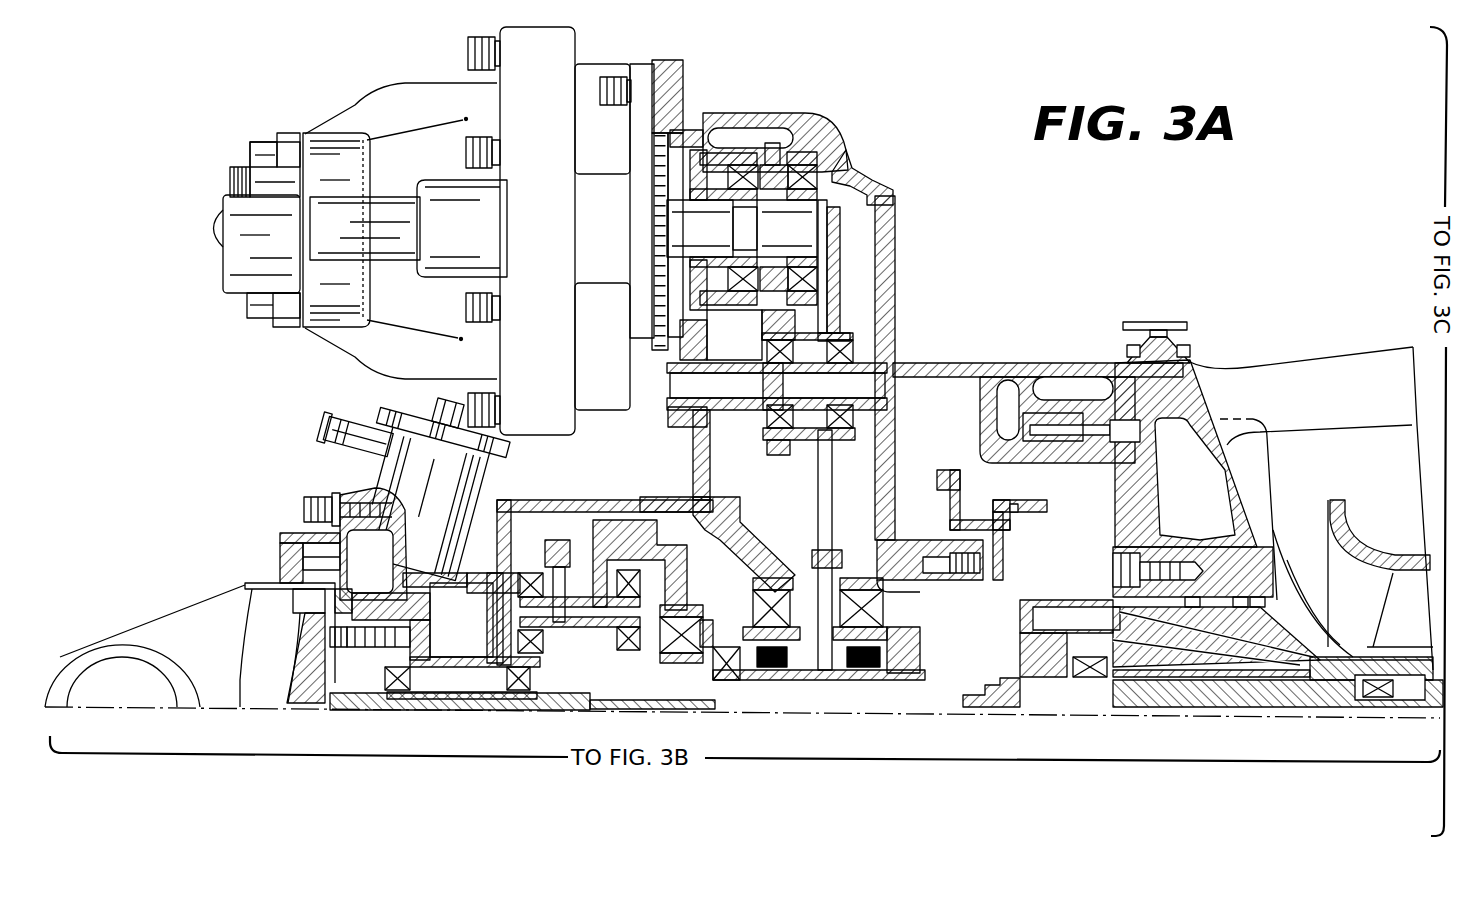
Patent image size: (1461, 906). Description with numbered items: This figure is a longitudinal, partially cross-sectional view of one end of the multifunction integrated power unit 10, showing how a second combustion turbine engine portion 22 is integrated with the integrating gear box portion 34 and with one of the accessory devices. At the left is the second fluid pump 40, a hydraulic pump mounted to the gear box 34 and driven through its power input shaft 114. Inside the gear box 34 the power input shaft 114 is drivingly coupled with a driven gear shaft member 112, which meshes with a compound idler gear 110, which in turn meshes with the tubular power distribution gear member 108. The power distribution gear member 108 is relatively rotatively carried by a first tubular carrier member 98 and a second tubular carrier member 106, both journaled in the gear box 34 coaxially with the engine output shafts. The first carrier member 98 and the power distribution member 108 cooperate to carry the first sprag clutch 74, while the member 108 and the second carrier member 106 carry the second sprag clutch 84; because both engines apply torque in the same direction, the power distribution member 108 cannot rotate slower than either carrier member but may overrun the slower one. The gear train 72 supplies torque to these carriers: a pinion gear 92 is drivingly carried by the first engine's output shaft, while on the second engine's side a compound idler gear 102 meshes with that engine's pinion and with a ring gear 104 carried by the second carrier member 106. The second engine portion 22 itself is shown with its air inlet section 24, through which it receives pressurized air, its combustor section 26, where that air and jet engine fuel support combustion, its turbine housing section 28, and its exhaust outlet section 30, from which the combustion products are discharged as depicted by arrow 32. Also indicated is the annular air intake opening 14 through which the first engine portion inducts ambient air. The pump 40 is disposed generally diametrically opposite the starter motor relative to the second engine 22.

The multifunction integrated power unit 10 is at (1155, 280).
The annular air intake opening 14 is at (1310, 598).
The second combustion turbine engine portion 22 is at (347, 490).
The air inlet section 24 is at (355, 418).
The combustor section 26 is at (482, 487).
The turbine housing section 28 is at (280, 567).
The exhaust outlet section 30 is at (138, 663).
The arrow 32 is at (113, 678).
The integrating gear box portion 34 is at (875, 190).
The second fluid pump 40 is at (563, 48).
The gear train 72 is at (846, 500).
The first sprag clutch 74 is at (852, 677).
The second sprag clutch 84 is at (750, 678).
The pinion gear 92 is at (1007, 678).
The first tubular carrier member 98 is at (930, 643).
The compound idler gear 102 is at (580, 543).
The ring gear 104 is at (623, 525).
The second tubular carrier member 106 is at (712, 658).
The tubular power distribution gear member 108 is at (792, 675).
The compound idler gear 110 is at (842, 317).
The driven gear shaft member 112 is at (797, 155).
The power input shaft 114 is at (668, 225).